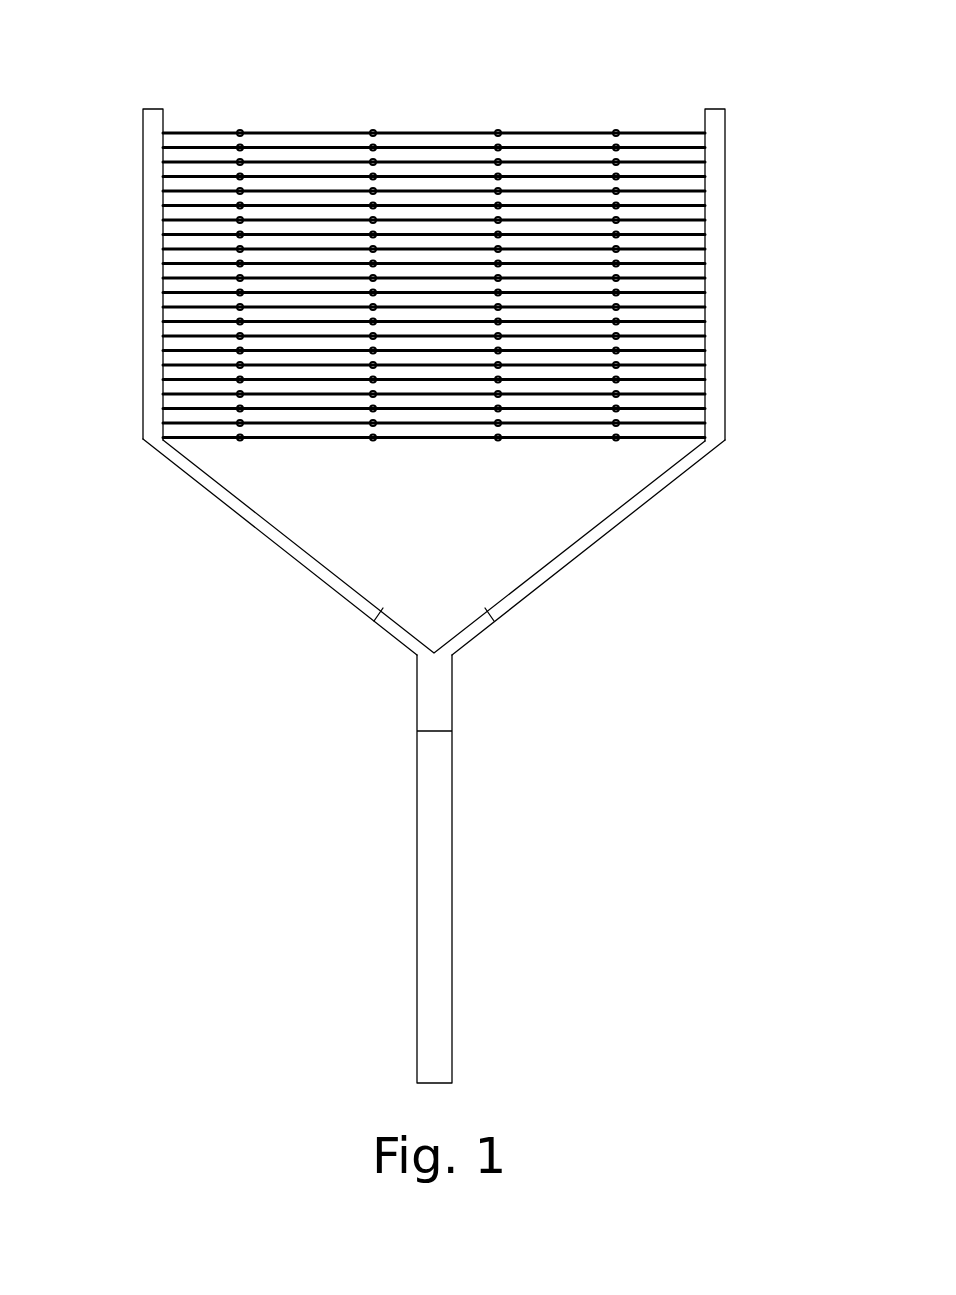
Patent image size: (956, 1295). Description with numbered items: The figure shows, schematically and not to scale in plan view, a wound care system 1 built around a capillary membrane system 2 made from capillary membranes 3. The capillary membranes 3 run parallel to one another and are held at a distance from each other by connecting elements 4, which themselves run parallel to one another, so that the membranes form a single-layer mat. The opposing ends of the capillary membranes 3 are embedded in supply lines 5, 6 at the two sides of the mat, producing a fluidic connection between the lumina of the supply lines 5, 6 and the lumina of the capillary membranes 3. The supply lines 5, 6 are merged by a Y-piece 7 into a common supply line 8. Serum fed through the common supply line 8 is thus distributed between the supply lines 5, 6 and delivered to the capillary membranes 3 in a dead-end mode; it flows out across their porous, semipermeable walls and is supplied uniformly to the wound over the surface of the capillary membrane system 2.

The wound care system 1 is at (750, 76).
The capillary membrane system 2 is at (438, 120).
The capillary membranes 3 is at (570, 205).
The connecting elements 4 is at (373, 132).
The supply line 5 is at (715, 248).
The supply line 6 is at (154, 250).
The Y-piece 7 is at (452, 668).
The common supply line 8 is at (442, 891).